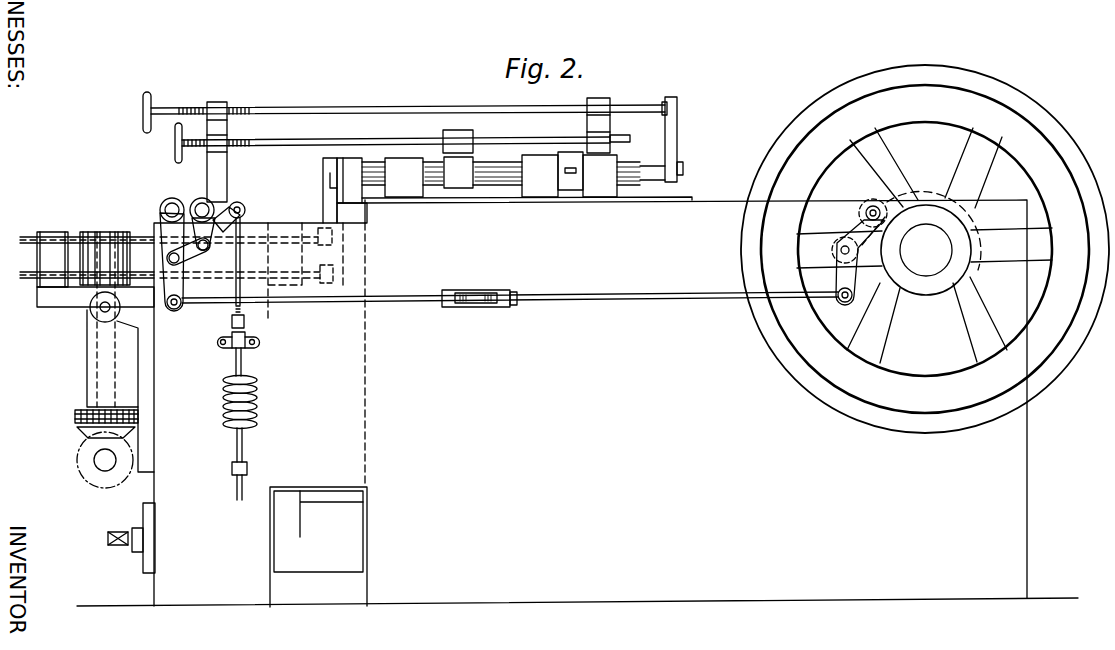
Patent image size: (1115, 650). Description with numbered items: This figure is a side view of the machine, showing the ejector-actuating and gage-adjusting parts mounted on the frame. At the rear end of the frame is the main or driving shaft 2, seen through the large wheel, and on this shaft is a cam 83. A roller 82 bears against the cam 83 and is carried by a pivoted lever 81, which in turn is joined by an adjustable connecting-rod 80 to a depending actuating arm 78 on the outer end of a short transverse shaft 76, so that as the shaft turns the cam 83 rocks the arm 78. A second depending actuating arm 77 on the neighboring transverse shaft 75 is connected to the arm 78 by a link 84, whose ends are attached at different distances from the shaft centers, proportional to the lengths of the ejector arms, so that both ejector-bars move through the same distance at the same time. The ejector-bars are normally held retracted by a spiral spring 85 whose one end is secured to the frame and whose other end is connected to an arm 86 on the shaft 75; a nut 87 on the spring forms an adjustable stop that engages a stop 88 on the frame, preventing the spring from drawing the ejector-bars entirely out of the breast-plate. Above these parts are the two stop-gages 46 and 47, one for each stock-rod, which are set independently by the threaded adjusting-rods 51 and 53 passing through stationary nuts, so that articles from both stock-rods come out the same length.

The main or driving shaft 2 is at (926, 250).
The stop-gage 46 is at (341, 213).
The stop-gage 47 is at (323, 205).
The adjusting-rod 51 is at (395, 140).
The adjusting-rod 53 is at (403, 101).
The transverse shaft 75 is at (199, 201).
The transverse shaft 76 is at (164, 202).
The actuating arm 77 is at (219, 214).
The actuating arm 78 is at (170, 235).
The adjustable connecting-rod 80 is at (661, 298).
The pivoted lever 81 is at (851, 278).
The roller 82 is at (866, 213).
The cam 83 is at (930, 200).
The link 84 is at (203, 249).
The spiral spring 85 is at (225, 400).
The arm 86 is at (221, 205).
The nut 87 is at (232, 318).
The stop 88 is at (242, 340).